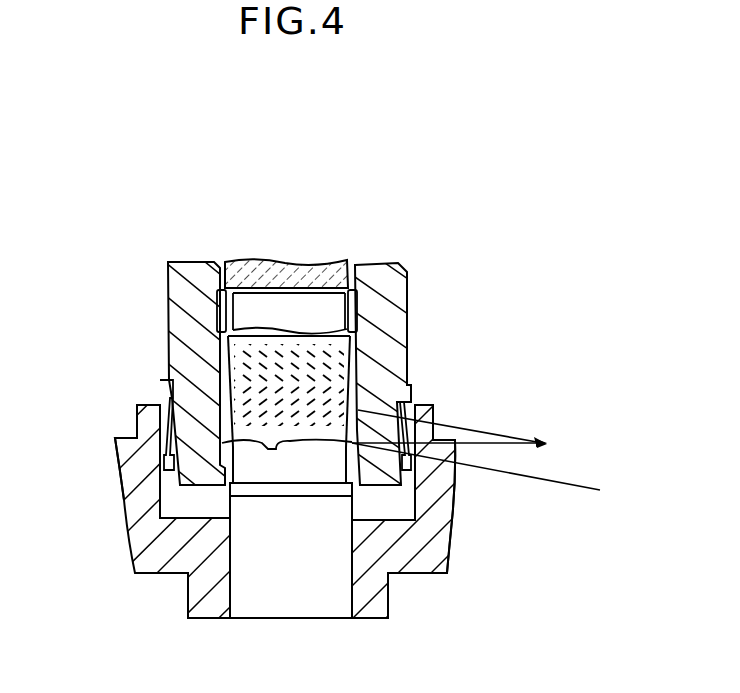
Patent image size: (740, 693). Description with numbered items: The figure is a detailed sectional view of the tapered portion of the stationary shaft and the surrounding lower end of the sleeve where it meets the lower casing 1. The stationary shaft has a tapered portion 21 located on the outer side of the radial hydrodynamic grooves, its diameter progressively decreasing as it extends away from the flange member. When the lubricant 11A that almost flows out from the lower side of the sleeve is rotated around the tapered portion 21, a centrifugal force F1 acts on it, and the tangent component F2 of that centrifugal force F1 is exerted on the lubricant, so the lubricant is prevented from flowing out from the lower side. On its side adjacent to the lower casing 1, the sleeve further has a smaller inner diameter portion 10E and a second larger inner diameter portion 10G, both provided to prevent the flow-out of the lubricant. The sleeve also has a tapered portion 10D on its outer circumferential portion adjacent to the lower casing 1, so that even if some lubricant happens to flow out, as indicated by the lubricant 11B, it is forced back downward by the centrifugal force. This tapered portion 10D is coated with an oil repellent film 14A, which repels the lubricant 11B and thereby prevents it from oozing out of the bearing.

The lower casing 1 is at (397, 565).
The tapered portion 10D is at (185, 445).
The smaller inner diameter portion 10E is at (415, 540).
The second larger inner diameter portion 10G is at (410, 452).
The lubricant 11A is at (268, 450).
The lubricant 11B is at (137, 417).
The oil repellent film 14A is at (166, 388).
The tapered portion 21 is at (160, 520).
The centrifugal force F1 is at (493, 443).
The tangent component F2 is at (543, 448).